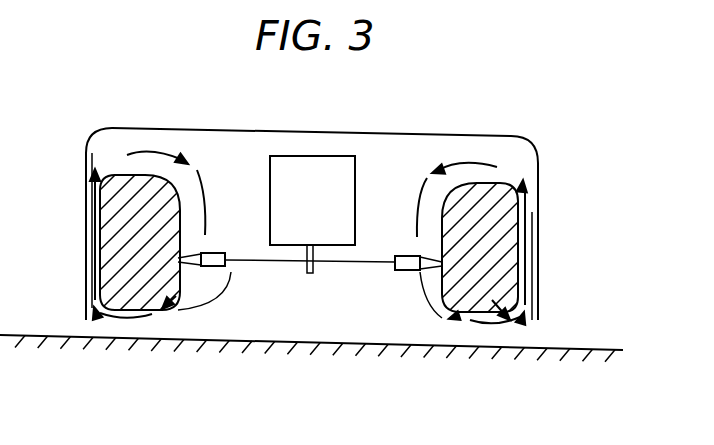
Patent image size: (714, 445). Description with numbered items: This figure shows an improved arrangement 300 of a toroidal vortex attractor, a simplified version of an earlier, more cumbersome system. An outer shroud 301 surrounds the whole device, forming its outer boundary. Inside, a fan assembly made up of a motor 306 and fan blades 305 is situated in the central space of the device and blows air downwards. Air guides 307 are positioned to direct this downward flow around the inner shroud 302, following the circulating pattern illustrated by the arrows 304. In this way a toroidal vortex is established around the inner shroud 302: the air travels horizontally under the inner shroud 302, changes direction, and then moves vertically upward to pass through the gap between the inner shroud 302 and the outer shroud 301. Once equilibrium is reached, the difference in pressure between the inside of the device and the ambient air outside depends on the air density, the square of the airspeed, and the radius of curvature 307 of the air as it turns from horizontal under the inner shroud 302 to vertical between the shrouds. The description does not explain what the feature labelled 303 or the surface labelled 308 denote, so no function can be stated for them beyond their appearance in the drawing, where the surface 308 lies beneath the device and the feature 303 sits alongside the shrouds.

The improved arrangement 300 is at (579, 95).
The outer shroud 301 is at (390, 134).
The inner shroud 302 is at (84, 223).
The fender wall 303 is at (537, 291).
The arrows 304 is at (127, 155).
The fan blades 305 is at (213, 252).
The motor 306 is at (356, 193).
The air guides 307 is at (231, 270).
The ground surface 308 is at (219, 347).